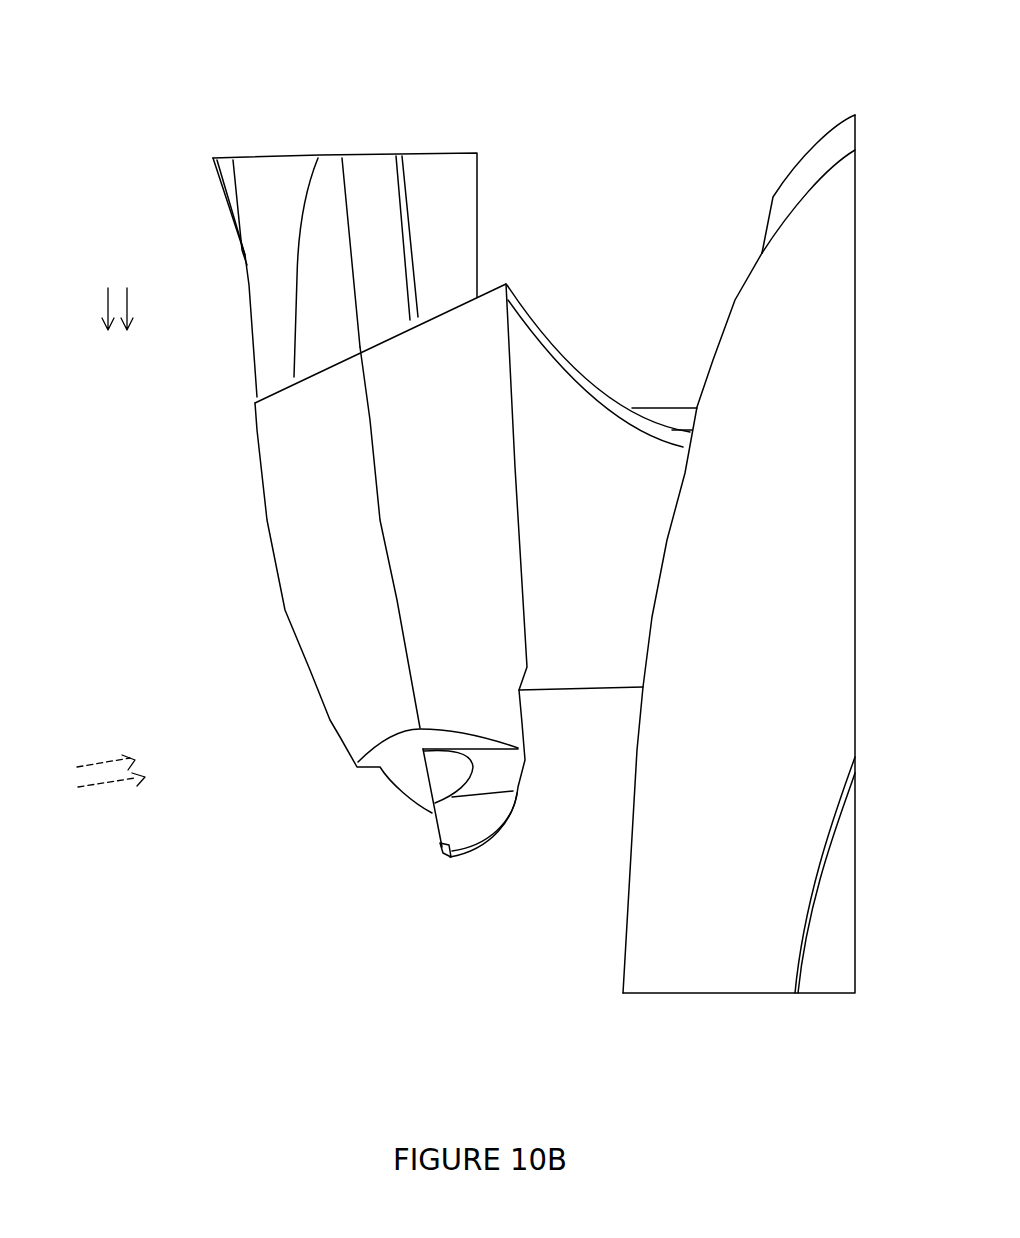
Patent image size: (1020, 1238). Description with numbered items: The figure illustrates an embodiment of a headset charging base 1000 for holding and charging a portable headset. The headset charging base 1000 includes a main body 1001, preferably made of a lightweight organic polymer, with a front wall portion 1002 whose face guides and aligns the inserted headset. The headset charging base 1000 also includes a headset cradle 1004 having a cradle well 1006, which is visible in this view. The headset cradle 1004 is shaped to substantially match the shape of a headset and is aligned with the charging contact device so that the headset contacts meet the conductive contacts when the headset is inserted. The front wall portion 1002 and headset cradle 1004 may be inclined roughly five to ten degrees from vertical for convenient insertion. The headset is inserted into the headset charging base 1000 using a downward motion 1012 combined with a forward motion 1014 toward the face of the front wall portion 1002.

The headset charging base 1000 is at (743, 118).
The main body 1001 is at (835, 538).
The front wall portion 1002 is at (618, 835).
The headset cradle 1004 is at (623, 527).
The cradle well 1006 is at (504, 266).
The downward motion 1012 is at (85, 309).
The forward motion 1014 is at (108, 759).